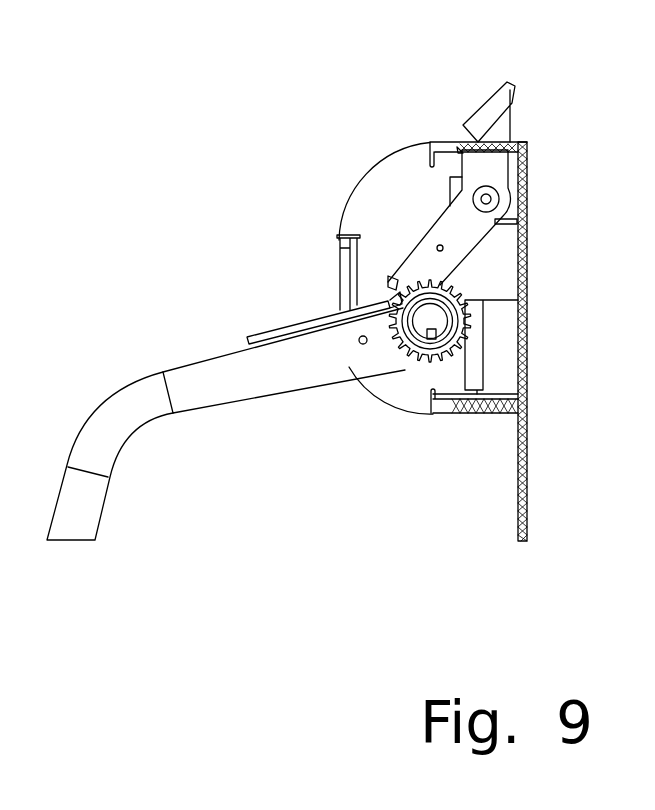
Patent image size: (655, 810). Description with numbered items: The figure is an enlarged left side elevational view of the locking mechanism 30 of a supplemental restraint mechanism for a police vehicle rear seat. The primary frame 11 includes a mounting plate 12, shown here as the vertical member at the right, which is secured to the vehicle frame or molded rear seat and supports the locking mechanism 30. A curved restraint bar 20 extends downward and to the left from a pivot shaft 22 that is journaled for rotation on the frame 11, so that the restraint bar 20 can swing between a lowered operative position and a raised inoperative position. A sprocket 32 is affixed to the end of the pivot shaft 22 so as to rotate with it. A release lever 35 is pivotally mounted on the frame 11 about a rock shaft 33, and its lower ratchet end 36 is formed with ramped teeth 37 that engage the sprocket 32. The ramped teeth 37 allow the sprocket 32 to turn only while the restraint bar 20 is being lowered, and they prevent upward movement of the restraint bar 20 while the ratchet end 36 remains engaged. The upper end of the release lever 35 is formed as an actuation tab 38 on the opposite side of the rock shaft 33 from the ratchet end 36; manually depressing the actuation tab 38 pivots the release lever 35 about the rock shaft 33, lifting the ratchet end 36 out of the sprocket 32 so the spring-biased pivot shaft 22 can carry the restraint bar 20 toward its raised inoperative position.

The primary frame 11 is at (522, 148).
The mounting plate 12 is at (523, 483).
The curved restraint bar 20 is at (95, 460).
The pivot shaft 22 is at (412, 338).
The locking mechanism 30 is at (358, 145).
The sprocket 32 is at (470, 326).
The rock shaft 33 is at (493, 193).
The release lever 35 is at (465, 232).
The ratchet end 36 is at (393, 280).
The ramped teeth 37 is at (400, 292).
The actuation tab 38 is at (495, 115).